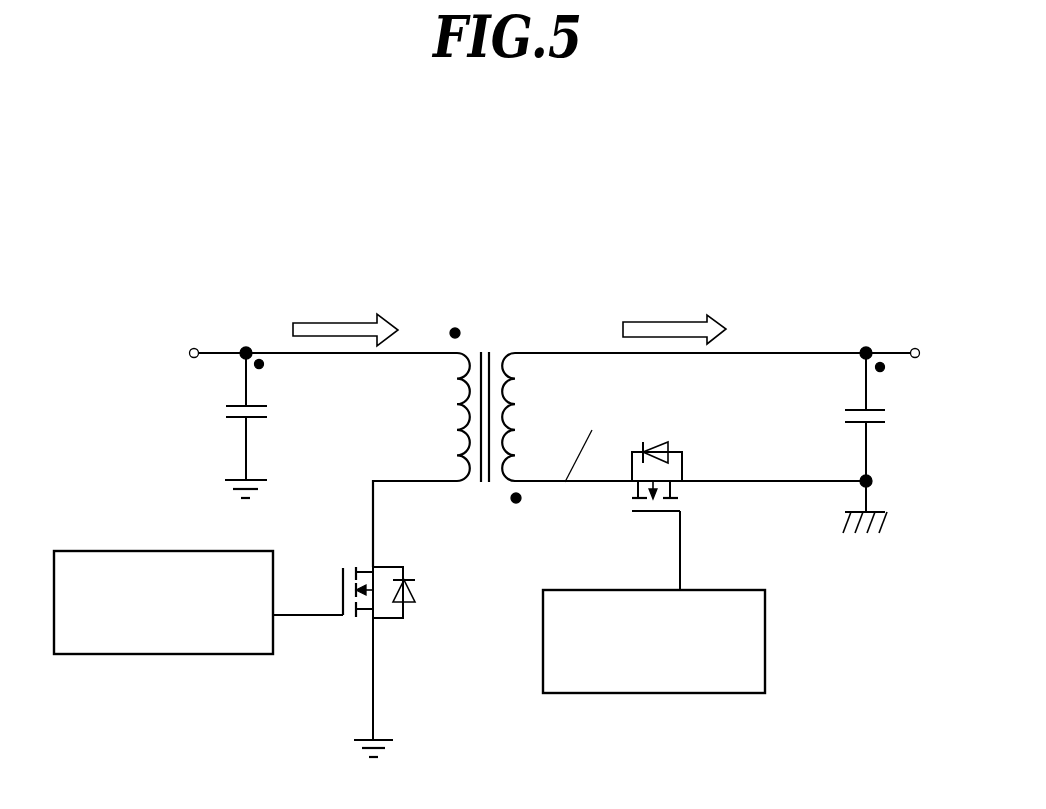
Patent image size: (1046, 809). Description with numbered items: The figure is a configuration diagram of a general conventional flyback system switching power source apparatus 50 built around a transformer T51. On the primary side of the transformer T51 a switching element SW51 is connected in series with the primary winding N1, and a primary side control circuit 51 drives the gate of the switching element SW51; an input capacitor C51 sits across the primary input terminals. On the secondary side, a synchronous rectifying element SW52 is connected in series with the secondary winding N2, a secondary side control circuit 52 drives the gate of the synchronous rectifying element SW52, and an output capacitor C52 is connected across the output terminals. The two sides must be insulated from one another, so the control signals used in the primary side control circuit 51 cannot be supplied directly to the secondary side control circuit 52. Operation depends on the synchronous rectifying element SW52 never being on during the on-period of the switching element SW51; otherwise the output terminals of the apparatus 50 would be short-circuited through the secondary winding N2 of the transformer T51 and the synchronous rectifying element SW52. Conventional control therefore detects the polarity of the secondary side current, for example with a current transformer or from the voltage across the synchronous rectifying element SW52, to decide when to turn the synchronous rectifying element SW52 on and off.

The flyback system switching power source apparatus 50 is at (777, 284).
The primary side control circuit 51 is at (112, 550).
The secondary side control circuit 52 is at (645, 693).
The primary side capacitor C51 is at (219, 425).
The secondary side capacitor C52 is at (889, 443).
The transformer T51 is at (483, 392).
The primary winding N1 is at (441, 404).
The secondary winding N2 is at (528, 428).
The switching element SW51 is at (355, 642).
The synchronous rectifying element SW52 is at (633, 516).